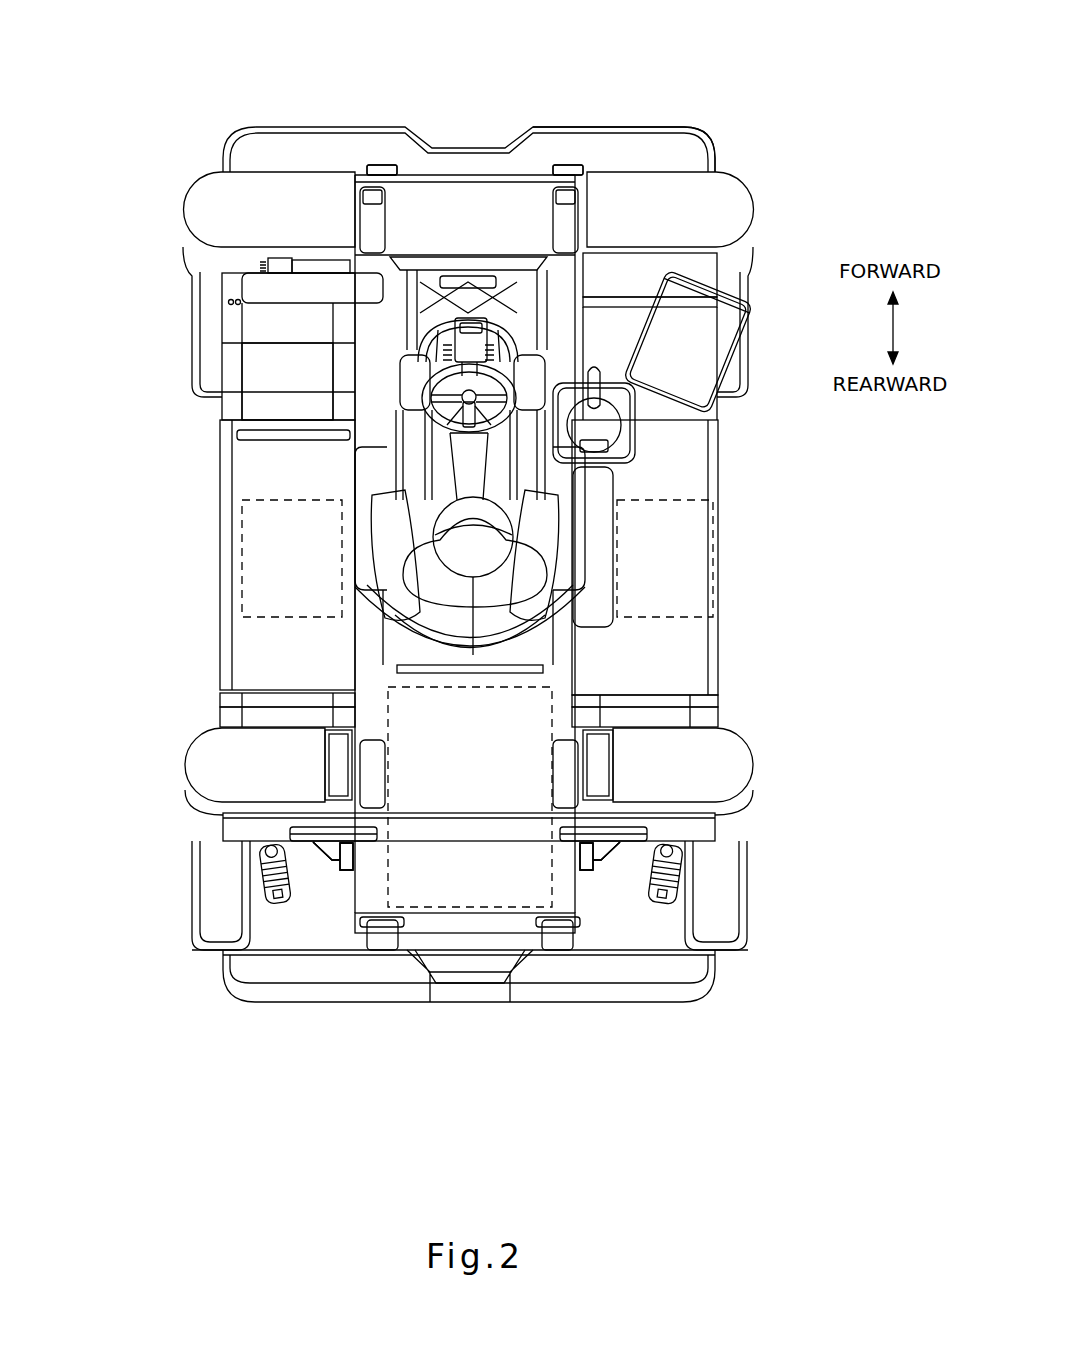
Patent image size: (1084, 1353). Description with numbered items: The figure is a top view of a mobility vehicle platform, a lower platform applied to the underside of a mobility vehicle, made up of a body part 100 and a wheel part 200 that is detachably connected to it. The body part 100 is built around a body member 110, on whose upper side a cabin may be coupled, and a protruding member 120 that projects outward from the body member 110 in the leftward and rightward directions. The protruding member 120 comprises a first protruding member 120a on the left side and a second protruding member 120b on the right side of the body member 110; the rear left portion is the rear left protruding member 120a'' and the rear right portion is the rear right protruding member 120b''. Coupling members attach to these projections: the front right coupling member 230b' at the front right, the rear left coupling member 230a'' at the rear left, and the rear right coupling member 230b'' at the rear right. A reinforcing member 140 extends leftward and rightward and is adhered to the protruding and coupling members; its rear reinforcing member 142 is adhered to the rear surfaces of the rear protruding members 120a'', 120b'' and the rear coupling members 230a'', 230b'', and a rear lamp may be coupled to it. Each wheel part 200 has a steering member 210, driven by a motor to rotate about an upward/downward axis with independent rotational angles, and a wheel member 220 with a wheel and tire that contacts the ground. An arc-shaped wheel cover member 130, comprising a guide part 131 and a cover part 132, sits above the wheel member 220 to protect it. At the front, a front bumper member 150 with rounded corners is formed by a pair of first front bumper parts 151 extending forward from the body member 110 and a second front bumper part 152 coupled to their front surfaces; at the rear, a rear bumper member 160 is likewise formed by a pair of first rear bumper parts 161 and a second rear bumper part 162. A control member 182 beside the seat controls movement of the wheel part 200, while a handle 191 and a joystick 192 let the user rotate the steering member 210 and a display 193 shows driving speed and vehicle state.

The body part 100 is at (212, 556).
The body member 110 is at (705, 652).
The protruding member 120 is at (824, 1098).
The first protruding member 120a is at (602, 995).
The second protruding member 120b is at (732, 995).
The (1-2)-th protruding member 120a'' is at (316, 947).
The (2-2)-th protruding member 120b'' is at (598, 947).
The wheel cover member 130 is at (107, 324).
The guide part 131 is at (230, 328).
The cover part 132 is at (262, 363).
The reinforcing member 140 is at (105, 852).
The rear reinforcing member 142 is at (245, 832).
The front bumper member 150 is at (627, 66).
The first front bumper part 151 is at (556, 165).
The second front bumper part 152 is at (622, 148).
The rear bumper member 160 is at (410, 1080).
The first rear bumper part 161 is at (385, 943).
The second rear bumper part 162 is at (555, 972).
The control member 182 is at (715, 557).
The handle 191 is at (466, 355).
The joystick 192 is at (612, 410).
The display 193 is at (705, 355).
The wheel part 200 is at (762, 862).
The steering member 210 is at (660, 905).
The wheel member 220 is at (730, 913).
The (2-1)-th coupling member 230b' is at (715, 209).
The (1-2)-th coupling member 230a'' is at (224, 765).
The (2-2)-th coupling member 230b'' is at (716, 765).